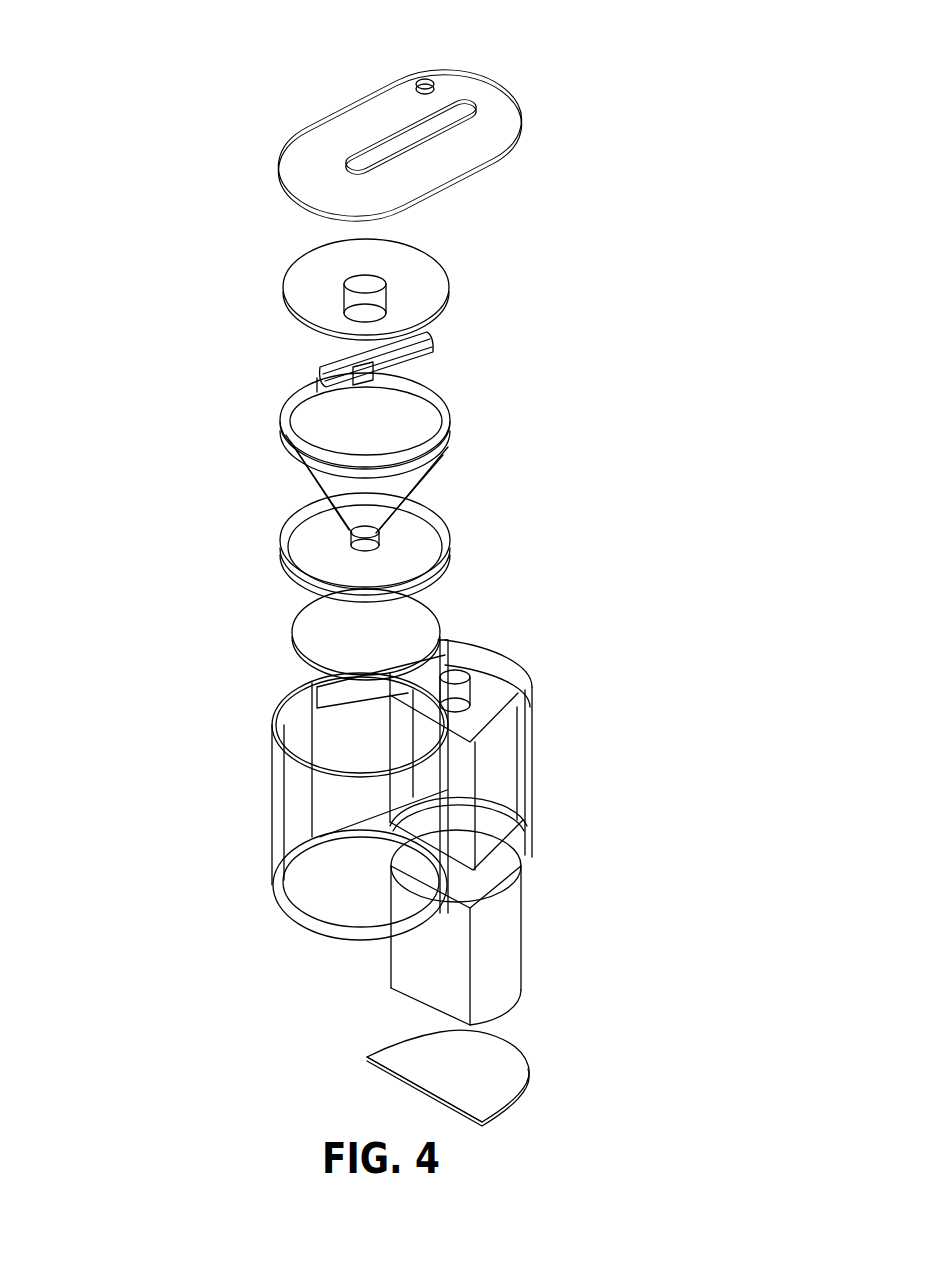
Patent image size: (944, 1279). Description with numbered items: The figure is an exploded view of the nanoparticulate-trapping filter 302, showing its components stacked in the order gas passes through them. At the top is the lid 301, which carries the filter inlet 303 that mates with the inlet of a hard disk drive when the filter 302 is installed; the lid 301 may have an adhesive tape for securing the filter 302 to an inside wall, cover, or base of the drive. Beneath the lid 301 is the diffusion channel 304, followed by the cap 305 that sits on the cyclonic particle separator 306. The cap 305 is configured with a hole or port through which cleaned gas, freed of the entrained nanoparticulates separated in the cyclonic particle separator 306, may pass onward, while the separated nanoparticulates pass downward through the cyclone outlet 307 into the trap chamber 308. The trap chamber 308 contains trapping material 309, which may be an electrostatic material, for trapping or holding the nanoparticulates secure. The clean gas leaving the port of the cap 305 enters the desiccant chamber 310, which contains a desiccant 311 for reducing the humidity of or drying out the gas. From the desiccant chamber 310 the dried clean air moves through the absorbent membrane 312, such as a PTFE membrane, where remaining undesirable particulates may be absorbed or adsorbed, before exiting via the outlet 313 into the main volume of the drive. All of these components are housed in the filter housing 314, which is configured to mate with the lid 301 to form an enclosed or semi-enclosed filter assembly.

The lid 301 is at (456, 158).
The filter 302 is at (168, 191).
The filter inlet 303 is at (424, 80).
The diffusion channel 304 is at (440, 360).
The cap 305 is at (438, 283).
The cyclonic particle separator 306 is at (447, 456).
The cyclone outlet 307 is at (380, 546).
The trap chamber 308 is at (451, 583).
The trapping material 309 is at (308, 628).
The desiccant chamber 310 is at (500, 758).
The desiccant 311 is at (503, 925).
The absorbent membrane 312 is at (518, 1068).
The outlet 313 is at (465, 1118).
The filter housing 314 is at (274, 848).